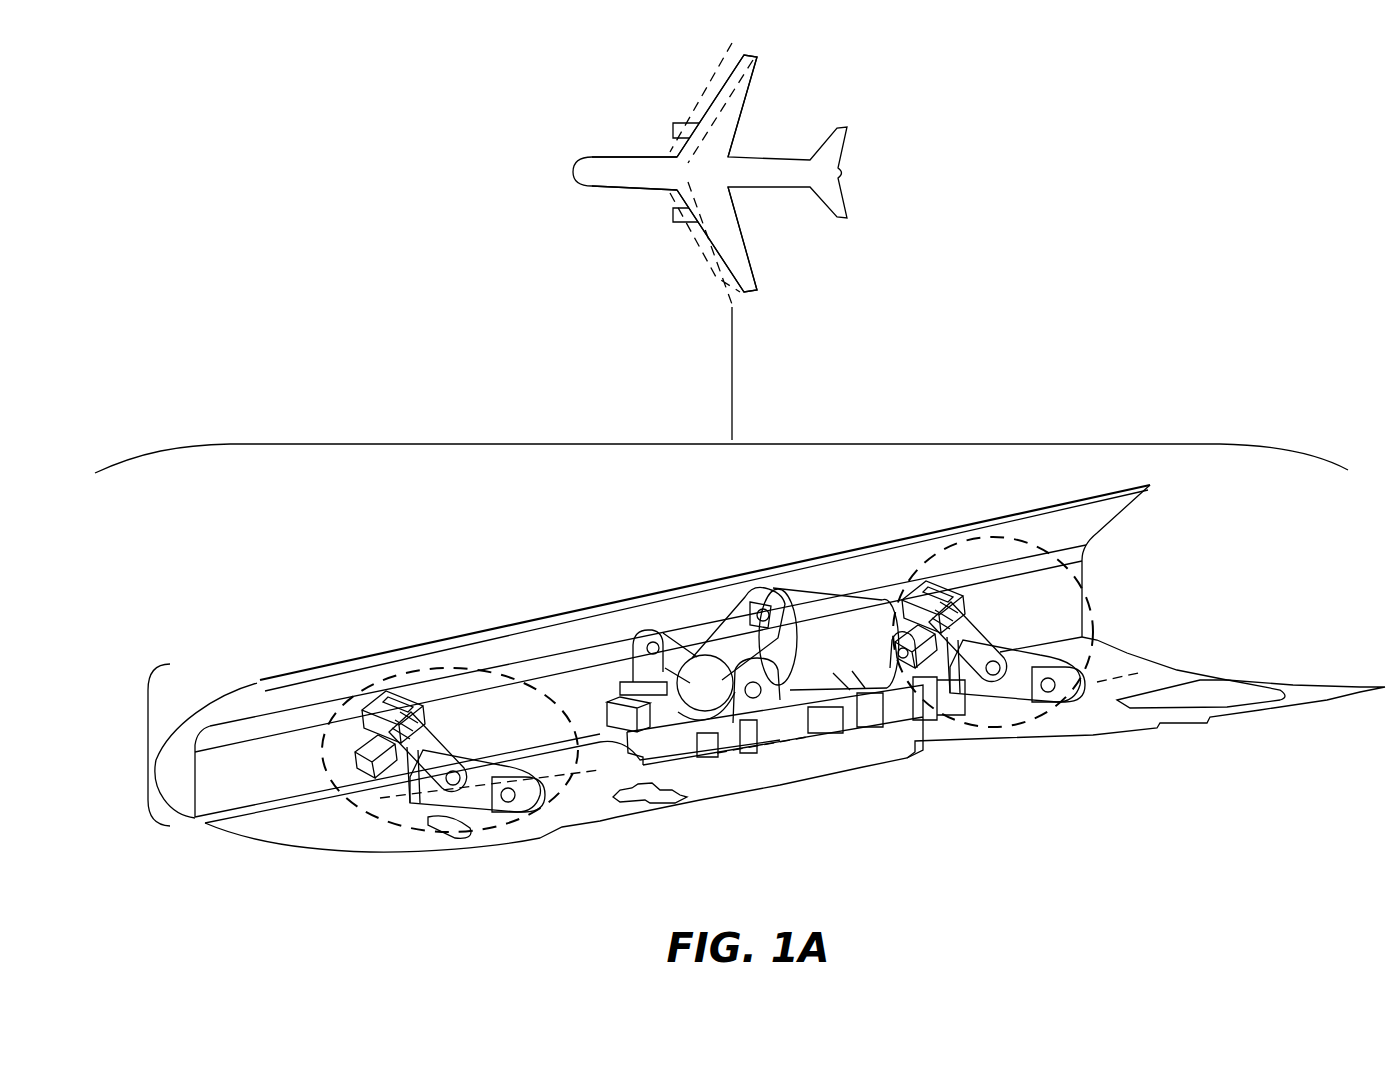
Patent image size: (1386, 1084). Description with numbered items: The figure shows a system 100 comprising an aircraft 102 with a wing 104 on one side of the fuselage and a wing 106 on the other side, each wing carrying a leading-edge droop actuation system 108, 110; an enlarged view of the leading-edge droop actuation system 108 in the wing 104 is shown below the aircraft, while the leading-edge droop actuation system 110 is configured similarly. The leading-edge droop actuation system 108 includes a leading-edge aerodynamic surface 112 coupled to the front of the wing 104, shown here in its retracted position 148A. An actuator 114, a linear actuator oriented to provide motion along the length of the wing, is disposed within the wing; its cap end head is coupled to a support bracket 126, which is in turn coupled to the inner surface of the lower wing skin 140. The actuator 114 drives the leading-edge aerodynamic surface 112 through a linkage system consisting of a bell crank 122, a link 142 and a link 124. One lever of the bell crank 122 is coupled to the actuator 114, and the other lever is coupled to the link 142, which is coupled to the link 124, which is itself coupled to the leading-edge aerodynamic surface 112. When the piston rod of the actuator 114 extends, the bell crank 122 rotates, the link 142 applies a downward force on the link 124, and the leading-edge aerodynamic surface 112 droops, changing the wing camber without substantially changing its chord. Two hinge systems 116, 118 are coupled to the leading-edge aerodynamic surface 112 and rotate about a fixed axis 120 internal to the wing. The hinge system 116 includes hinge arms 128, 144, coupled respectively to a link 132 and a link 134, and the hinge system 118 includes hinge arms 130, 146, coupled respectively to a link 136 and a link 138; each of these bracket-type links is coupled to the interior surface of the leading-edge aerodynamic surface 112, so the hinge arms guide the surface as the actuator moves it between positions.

The system 100 is at (182, 73).
The aircraft 102 is at (588, 158).
The wing 104 is at (745, 237).
The wing 106 is at (746, 100).
The leading-edge droop actuation system 108 is at (708, 266).
The leading-edge droop actuation system 110 is at (713, 88).
The leading-edge aerodynamic surface 112 is at (1010, 520).
The actuator 114 is at (854, 661).
The hinge system 116 is at (523, 813).
The hinge system 118 is at (1060, 713).
The fixed axis 120 is at (1097, 682).
The bell crank 122 is at (706, 684).
The link 124 is at (610, 712).
The support bracket 126 is at (801, 722).
The hinge arm 128 is at (426, 760).
The hinge arm 130 is at (989, 646).
The link 132 is at (373, 701).
The link 134 is at (364, 749).
The link 136 is at (912, 594).
The link 138 is at (912, 629).
The lower wing skin 140 is at (699, 795).
The link 142 is at (628, 669).
The hinge arm 144 is at (425, 794).
The hinge arm 146 is at (1037, 654).
The retracted position 148A is at (147, 745).